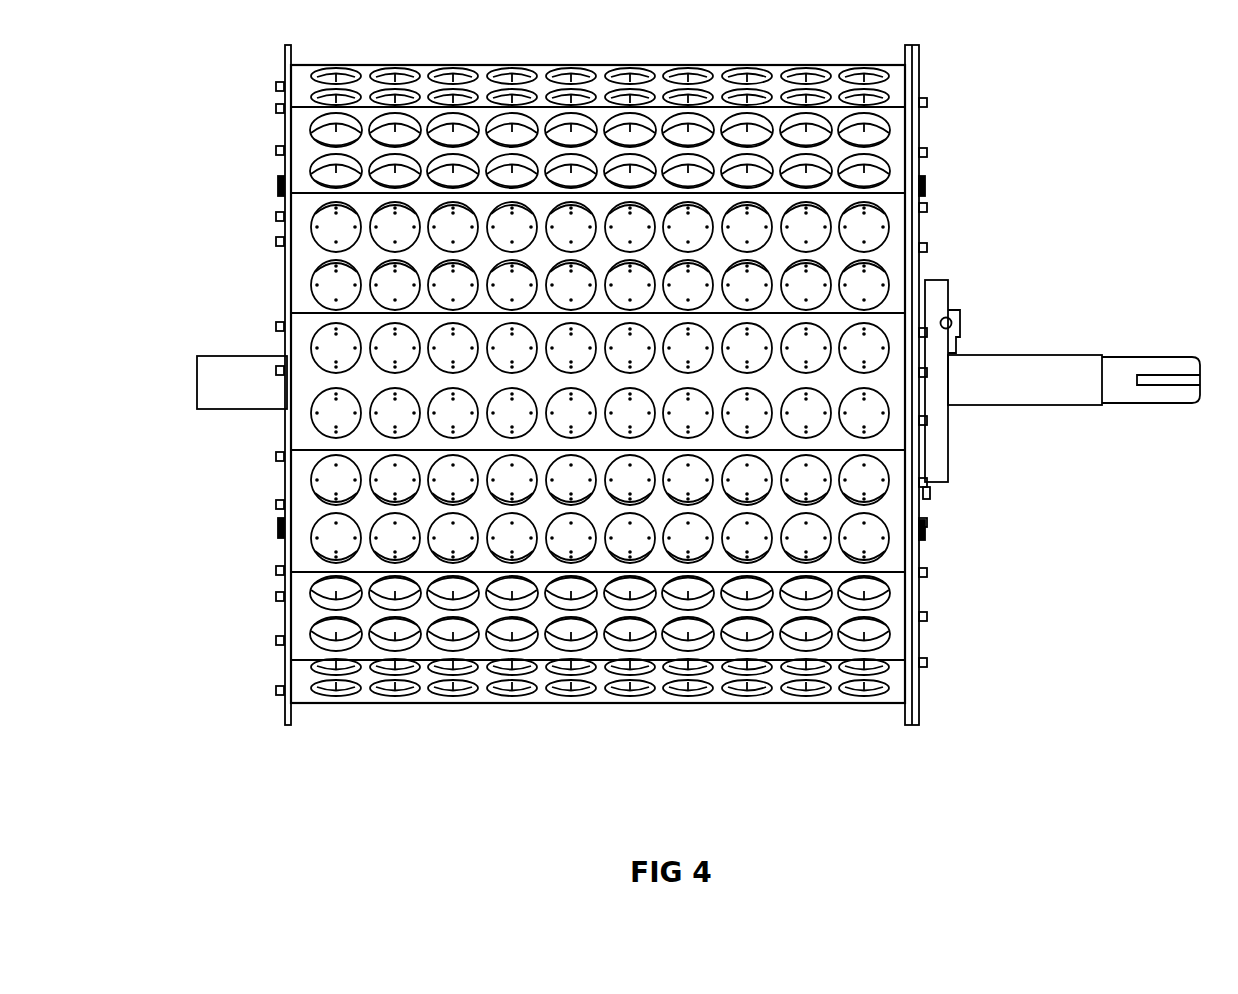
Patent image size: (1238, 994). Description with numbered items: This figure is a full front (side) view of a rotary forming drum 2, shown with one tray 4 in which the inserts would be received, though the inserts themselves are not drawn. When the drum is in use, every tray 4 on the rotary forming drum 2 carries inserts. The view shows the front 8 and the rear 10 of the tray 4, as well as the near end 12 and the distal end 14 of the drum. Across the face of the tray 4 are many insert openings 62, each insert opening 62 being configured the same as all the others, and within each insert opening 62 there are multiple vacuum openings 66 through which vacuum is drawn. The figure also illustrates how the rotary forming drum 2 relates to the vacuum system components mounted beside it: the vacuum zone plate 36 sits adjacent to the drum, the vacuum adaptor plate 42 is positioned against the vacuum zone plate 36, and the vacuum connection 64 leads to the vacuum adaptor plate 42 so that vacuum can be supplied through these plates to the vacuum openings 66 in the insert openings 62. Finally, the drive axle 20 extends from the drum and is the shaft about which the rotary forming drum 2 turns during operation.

The rotary forming drum 2 is at (998, 108).
The tray 4 is at (598, 68).
The front of the tray 8 is at (712, 103).
The rear of the tray 10 is at (600, 190).
The near end 12 is at (912, 520).
The distal end 14 is at (300, 250).
The drive axle 20 is at (1080, 362).
The vacuum zone plate 36 is at (935, 482).
The vacuum adaptor plate 42 is at (962, 337).
The insert opening 62 is at (326, 176).
The vacuum connection 64 is at (950, 312).
The vacuum openings 66 is at (318, 411).